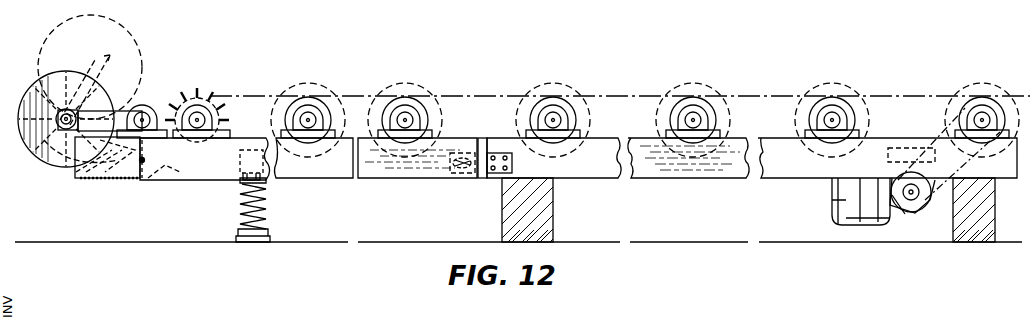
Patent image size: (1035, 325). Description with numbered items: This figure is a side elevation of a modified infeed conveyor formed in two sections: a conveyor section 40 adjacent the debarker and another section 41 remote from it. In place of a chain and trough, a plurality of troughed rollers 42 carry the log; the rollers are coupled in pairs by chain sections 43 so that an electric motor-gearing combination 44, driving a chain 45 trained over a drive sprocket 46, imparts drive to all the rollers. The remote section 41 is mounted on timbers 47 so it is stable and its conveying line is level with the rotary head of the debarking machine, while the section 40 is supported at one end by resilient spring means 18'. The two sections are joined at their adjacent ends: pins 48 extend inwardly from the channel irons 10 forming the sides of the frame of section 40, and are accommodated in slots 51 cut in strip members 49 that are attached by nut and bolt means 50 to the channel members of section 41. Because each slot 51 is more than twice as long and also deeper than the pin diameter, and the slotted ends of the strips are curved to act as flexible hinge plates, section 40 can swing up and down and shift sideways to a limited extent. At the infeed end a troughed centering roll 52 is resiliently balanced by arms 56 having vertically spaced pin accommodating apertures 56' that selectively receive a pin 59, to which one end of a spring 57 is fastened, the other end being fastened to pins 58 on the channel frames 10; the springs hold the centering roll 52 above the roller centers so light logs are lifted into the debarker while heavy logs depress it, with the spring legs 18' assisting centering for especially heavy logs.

The channel irons 10 is at (776, 170).
The resilient spring means 18' is at (268, 210).
The conveyor section 40 is at (401, 191).
The conveyor section 41 is at (672, 186).
The troughed rollers 42 is at (660, 122).
The chain sections 43 is at (778, 96).
The electric motor-gearing combination 44 is at (912, 220).
The chain 45 is at (975, 153).
The drive sprocket 46 is at (992, 86).
The timbers 47 is at (553, 206).
The pins 48 is at (463, 152).
The strip members 49 is at (482, 178).
The nut and bolt means 50 is at (510, 166).
The slots 51 is at (455, 173).
The centering roll 52 is at (50, 73).
The arms 56 is at (206, 175).
The pin accommodating apertures 56' is at (185, 181).
The spring 57 is at (117, 183).
The pins 58 is at (78, 178).
The pin 59 is at (142, 182).